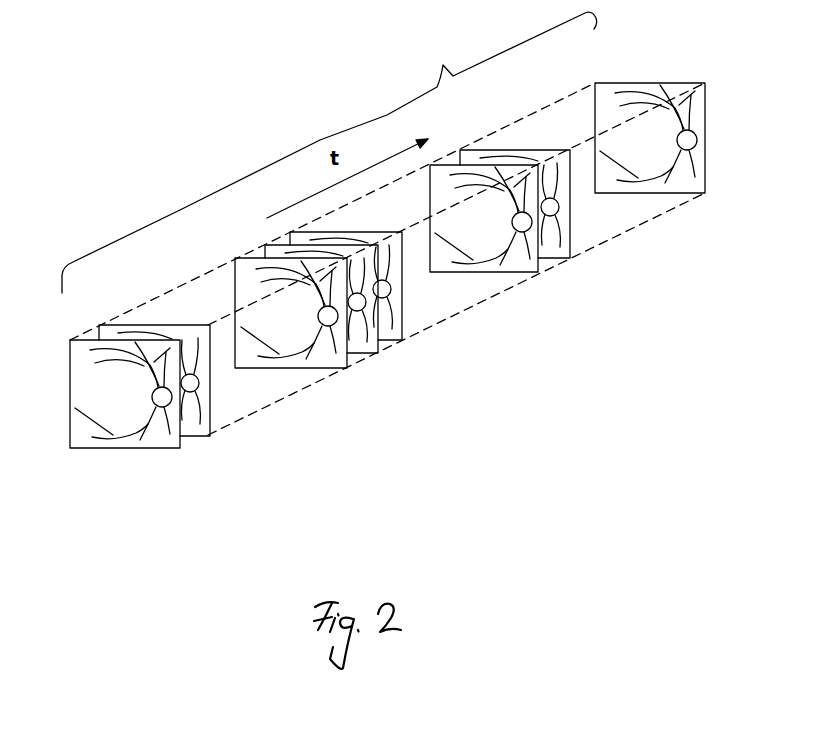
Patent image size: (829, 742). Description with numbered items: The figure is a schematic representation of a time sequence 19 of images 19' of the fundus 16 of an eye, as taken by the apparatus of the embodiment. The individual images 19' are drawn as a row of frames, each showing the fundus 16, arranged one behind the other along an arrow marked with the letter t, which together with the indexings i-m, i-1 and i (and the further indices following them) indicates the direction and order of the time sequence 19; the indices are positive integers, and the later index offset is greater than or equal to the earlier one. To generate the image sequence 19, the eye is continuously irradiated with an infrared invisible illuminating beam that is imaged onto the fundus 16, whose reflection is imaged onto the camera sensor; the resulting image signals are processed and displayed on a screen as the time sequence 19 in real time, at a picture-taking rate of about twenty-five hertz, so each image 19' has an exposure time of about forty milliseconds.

The time sequence of images 19 is at (329, 152).
The images 19' is at (415, 297).
The fundus 16 is at (125, 425).
The image index i−m i-m is at (151, 438).
The image index i−1 i-1 is at (347, 368).
The image index i is at (378, 353).